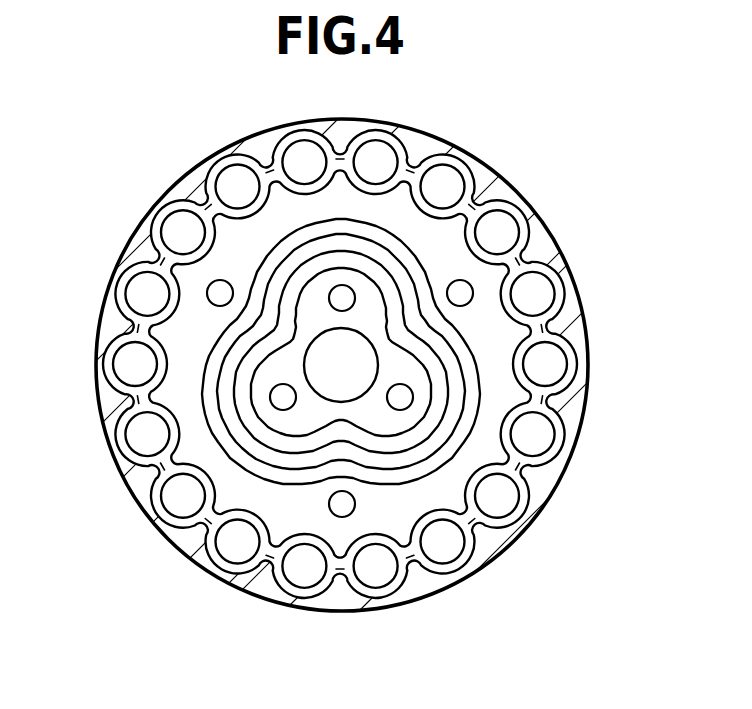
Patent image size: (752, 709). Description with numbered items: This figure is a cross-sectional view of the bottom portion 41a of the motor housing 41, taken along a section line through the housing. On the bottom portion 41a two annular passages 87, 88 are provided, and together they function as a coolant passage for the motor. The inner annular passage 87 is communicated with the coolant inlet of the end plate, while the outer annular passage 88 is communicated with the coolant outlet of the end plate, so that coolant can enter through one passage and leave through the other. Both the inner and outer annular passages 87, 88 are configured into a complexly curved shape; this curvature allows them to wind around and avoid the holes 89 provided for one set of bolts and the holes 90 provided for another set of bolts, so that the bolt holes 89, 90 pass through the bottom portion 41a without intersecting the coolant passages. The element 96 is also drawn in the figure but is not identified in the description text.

The motor housing 41 is at (247, 138).
The bottom portion 41a is at (195, 182).
The inner annular passage 87 is at (205, 374).
The outer annular passage 88 is at (150, 328).
The holes for the bolts 89 is at (330, 291).
The holes for the bolts 90 is at (207, 290).
The annular boss ring 96 is at (560, 382).